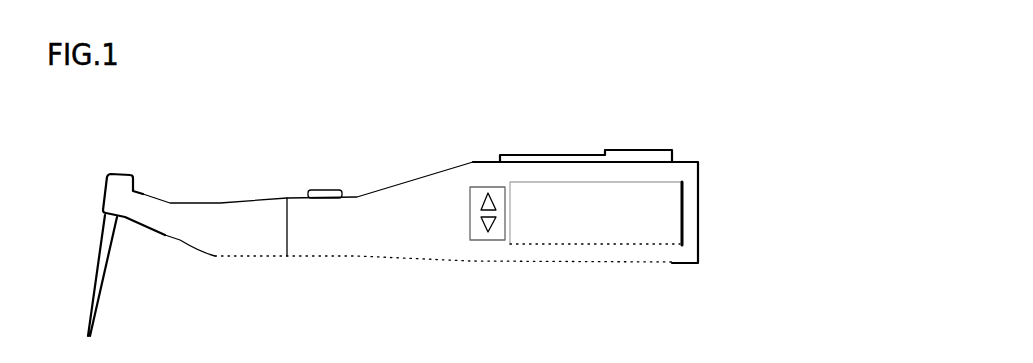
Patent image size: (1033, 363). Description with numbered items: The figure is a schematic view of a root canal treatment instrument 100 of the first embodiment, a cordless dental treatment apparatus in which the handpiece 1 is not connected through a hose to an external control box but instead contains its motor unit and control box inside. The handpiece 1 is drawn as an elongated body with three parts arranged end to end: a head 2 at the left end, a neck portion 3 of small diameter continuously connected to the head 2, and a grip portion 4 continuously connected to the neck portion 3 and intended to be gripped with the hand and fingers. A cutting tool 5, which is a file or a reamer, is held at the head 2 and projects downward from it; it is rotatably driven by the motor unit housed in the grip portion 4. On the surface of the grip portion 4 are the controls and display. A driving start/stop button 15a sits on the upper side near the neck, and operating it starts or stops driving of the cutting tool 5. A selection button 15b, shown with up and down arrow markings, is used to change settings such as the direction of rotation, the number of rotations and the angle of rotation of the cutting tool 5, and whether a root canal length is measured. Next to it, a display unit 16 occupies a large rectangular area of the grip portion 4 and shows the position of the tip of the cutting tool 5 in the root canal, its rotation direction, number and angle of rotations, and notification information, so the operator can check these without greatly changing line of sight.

The root canal treatment instrument 100 is at (710, 98).
The handpiece 1 is at (701, 173).
The head 2 is at (122, 187).
The neck portion 3 is at (217, 218).
The grip portion 4 is at (400, 230).
The cutting tool 5 is at (97, 306).
The driving start/stop button 15a is at (325, 188).
The selection button 15b is at (488, 236).
The display unit 16 is at (663, 214).